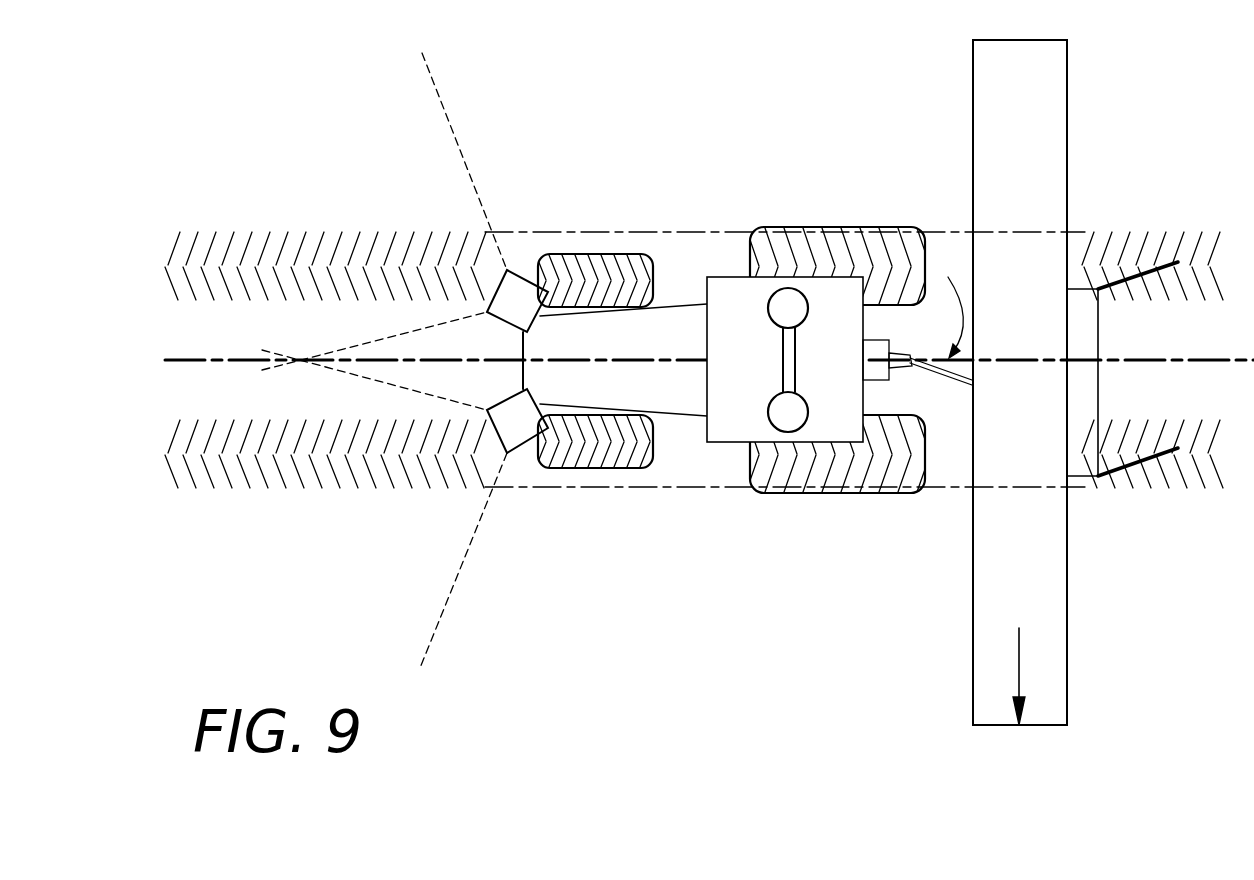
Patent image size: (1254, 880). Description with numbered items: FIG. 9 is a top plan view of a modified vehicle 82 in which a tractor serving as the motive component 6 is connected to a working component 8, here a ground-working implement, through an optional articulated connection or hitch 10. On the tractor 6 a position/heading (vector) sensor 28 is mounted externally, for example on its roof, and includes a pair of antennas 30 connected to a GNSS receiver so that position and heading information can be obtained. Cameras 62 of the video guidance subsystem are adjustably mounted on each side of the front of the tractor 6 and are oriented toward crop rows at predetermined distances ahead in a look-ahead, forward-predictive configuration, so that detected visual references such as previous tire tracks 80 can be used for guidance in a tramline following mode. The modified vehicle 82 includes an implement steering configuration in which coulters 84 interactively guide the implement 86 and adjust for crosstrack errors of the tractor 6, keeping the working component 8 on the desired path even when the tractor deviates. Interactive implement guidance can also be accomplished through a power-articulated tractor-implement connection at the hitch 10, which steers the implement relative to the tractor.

The motive component 6 is at (639, 349).
The working component 8 is at (1035, 327).
The hitch 10 is at (897, 354).
The position/heading sensor 28 is at (803, 358).
The antennas 30 is at (767, 412).
The cameras 62 is at (508, 387).
The tire tracks 80 is at (1213, 301).
The modified vehicle 82 is at (662, 205).
The coulters 84 is at (1135, 268).
The implement 86 is at (1040, 80).